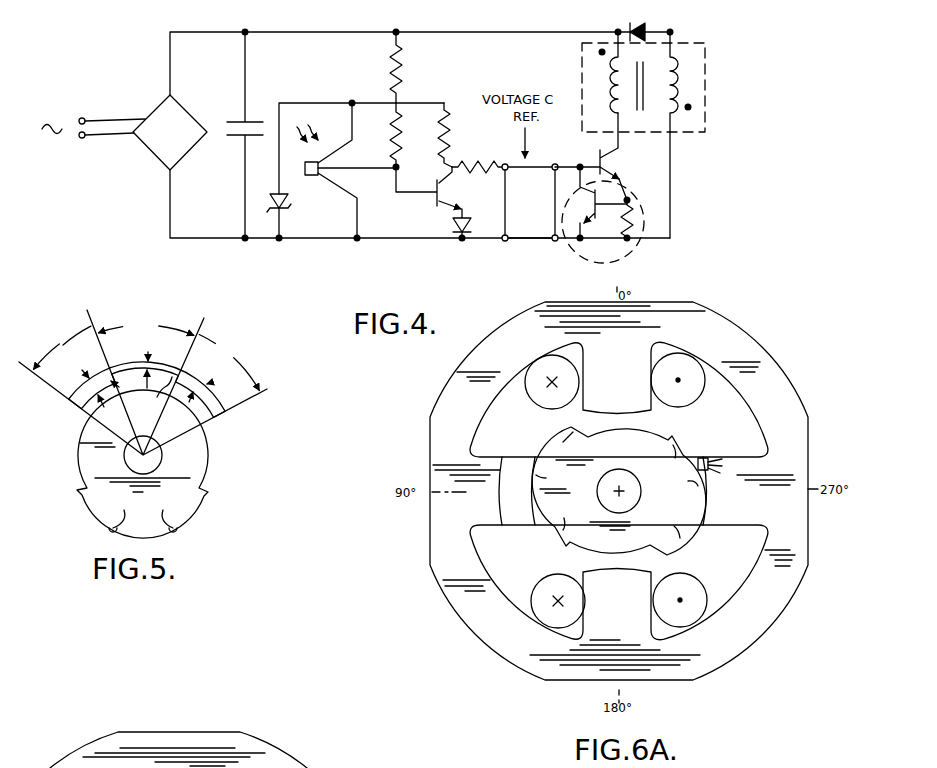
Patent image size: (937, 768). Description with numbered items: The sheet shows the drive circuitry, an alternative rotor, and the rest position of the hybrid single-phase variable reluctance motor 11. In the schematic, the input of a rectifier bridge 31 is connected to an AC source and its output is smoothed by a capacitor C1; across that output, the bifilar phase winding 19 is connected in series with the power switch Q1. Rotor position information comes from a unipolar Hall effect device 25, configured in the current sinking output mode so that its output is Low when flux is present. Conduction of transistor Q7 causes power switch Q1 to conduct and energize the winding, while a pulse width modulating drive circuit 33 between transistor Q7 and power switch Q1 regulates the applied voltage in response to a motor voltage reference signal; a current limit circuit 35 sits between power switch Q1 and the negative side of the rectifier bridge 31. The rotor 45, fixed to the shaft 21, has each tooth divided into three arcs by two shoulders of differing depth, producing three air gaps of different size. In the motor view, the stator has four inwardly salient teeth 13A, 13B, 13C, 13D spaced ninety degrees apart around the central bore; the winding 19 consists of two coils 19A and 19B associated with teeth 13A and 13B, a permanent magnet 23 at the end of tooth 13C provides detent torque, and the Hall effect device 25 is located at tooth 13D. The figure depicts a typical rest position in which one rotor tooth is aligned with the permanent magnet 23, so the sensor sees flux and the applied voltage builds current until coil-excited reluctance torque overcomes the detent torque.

In FIG. 4, the rectifier bridge 31 is at (181, 99).
In FIG. 4, the capacitor C1 is at (252, 118).
In FIG. 4, the Hall effect device 25 is at (303, 178).
In FIG. 6A, the Hall effect device 25 is at (704, 458).
In FIG. 4, the transistor Q7 is at (436, 184).
In FIG. 4, the pulse width modulating drive circuit 33 is at (542, 167).
In FIG. 4, the power switch Q1 is at (623, 156).
In FIG. 4, the current limit circuit 35 is at (622, 262).
In FIG. 4, the phase winding 19 is at (582, 72).
In FIG. 5, the rotor 45 is at (215, 462).
In FIG. 6A, the rotor 45 is at (619, 491).
In FIG. 5, the shaft 21 is at (162, 455).
In FIG. 6A, the shaft 21 is at (640, 497).
In FIG. 6A, the hybrid single-phase variable reluctance motor 11 is at (818, 409).
In FIG. 6A, the first stator tooth 13A is at (619, 399).
In FIG. 6A, the second stator tooth 13B is at (619, 582).
In FIG. 6A, the third stator tooth 13C is at (486, 491).
In FIG. 6A, the fourth stator tooth 13D is at (721, 491).
In FIG. 6A, the permanent magnet 23 is at (520, 491).
In FIG. 6A, the coil 19A is at (531, 406).
In FIG. 6A, the coil 19B is at (547, 576).